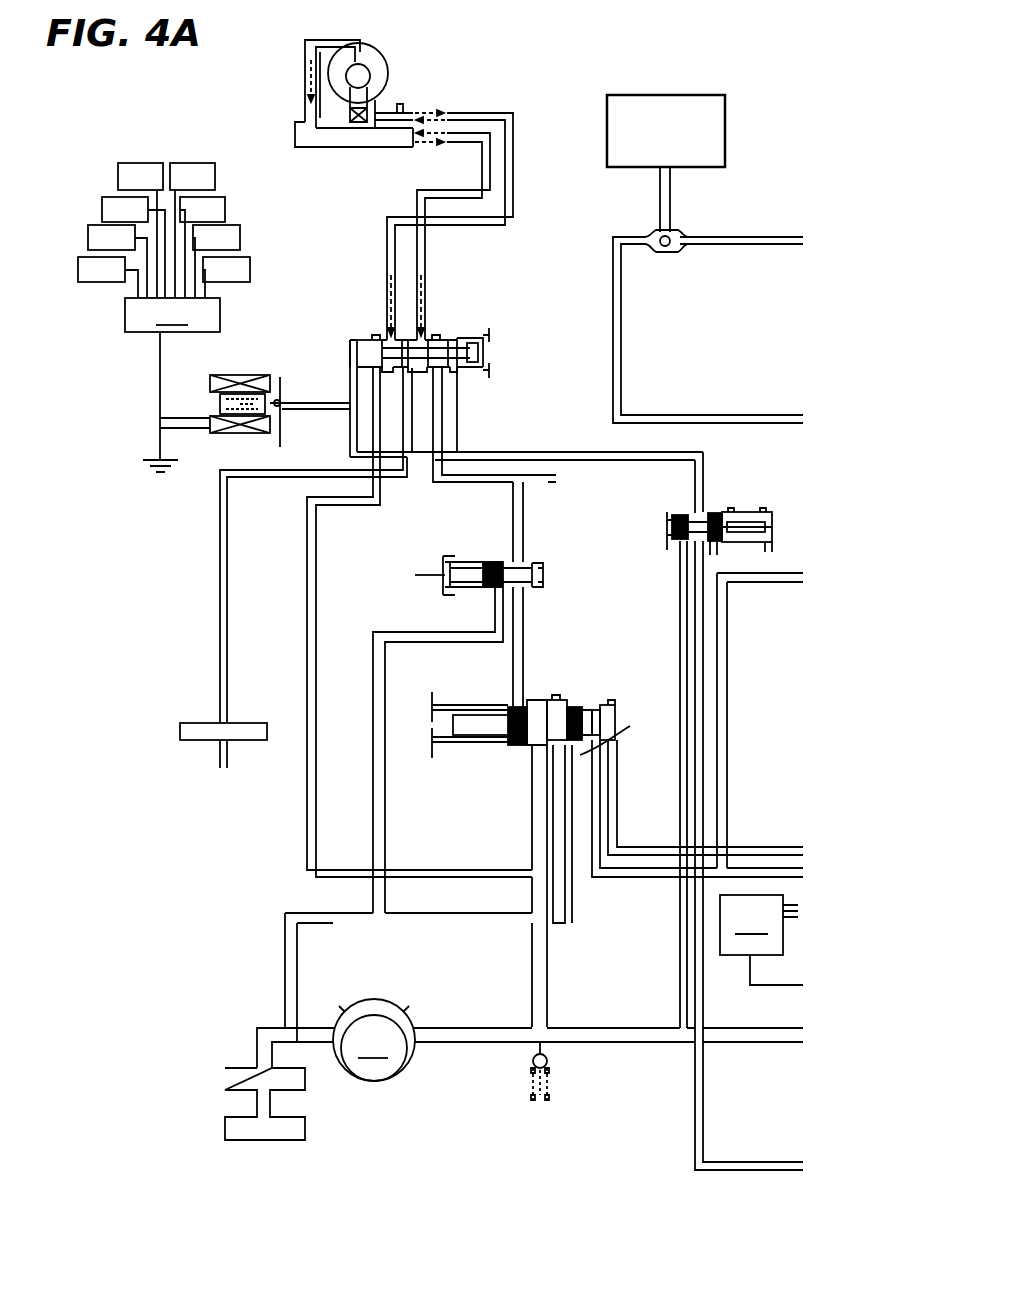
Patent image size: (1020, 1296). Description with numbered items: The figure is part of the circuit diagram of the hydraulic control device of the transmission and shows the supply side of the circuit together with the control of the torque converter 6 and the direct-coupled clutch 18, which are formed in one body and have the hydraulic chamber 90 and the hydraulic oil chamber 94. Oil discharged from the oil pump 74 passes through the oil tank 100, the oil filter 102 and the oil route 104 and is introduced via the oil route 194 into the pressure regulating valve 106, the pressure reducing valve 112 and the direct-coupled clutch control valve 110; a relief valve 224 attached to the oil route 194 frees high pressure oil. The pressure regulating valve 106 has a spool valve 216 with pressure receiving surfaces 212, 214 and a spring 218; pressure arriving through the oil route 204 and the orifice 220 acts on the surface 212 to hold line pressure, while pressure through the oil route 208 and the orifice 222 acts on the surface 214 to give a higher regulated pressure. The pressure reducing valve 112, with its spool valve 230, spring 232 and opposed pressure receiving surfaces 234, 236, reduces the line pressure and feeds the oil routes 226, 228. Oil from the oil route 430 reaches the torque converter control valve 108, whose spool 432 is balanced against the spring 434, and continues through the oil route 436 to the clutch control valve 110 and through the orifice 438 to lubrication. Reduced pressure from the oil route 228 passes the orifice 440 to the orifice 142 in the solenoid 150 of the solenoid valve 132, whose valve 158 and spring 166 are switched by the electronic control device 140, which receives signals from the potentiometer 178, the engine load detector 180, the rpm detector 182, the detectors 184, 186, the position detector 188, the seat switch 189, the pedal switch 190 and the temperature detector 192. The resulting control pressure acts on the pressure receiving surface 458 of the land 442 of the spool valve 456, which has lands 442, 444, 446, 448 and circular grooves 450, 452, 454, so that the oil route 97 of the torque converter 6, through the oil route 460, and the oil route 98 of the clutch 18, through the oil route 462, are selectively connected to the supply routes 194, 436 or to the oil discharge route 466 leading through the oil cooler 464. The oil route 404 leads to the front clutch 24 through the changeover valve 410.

The torque converter 6 is at (372, 50).
The direct-coupled clutch 18 is at (300, 62).
The front clutch 24 is at (720, 135).
The oil pump 74 is at (374, 1040).
The hydraulic chamber 90 is at (305, 108).
The hydraulic oil chamber 94 is at (332, 55).
The oil route 97 is at (400, 104).
The oil route 98 is at (343, 136).
The oil tank 100 is at (238, 1138).
The oil filter 102 is at (228, 1080).
The oil route 104 is at (270, 1028).
The pressure regulating valve 106 is at (604, 828).
The torque converter control valve 108 is at (492, 565).
The direct-coupled clutch control valve 110 is at (497, 354).
The pressure reducing valve 112 is at (694, 707).
The solenoid valve 132 is at (223, 391).
The electronic control device 140 is at (172, 315).
The orifice 142 is at (290, 409).
The solenoid 150 is at (212, 383).
The valve 158 is at (242, 388).
The spring 166 is at (238, 428).
The potentiometer 178 is at (761, 940).
The engine load detector 180 is at (108, 277).
The rpm detector 182 is at (117, 261).
The detector 184 is at (133, 247).
The detector 186 is at (140, 230).
The position detector 188 is at (192, 230).
The seat switch 189 is at (202, 247).
The pedal switch 190 is at (216, 261).
The detector 192 is at (226, 277).
The oil route 194 is at (316, 557).
The oil route 204 is at (782, 845).
The oil route 208 is at (612, 382).
The pressure receiving surface 212 is at (608, 702).
The pressure receiving surface 214 is at (598, 703).
The spool valve 216 is at (520, 705).
The spring 218 is at (448, 745).
The orifice 220 is at (610, 770).
The orifice 222 is at (595, 770).
The relief valve 224 is at (548, 1068).
The oil route 226 is at (700, 630).
The oil route 228 is at (573, 452).
The spool valve 230 is at (675, 527).
The spring 232 is at (750, 504).
The pressure receiving surface 234 is at (710, 512).
The pressure receiving surface 236 is at (742, 510).
The oil route 404 is at (716, 238).
The changeover valve 410 is at (668, 247).
The oil route 430 is at (523, 611).
The valve land 432 is at (495, 565).
The spring 434 is at (447, 560).
The oil route 436 is at (514, 511).
The orifice 438 is at (548, 478).
The orifice 440 is at (352, 438).
The land 442 is at (368, 338).
The land 444 is at (404, 336).
The land 446 is at (438, 338).
The land 448 is at (470, 335).
The circular groove 450 is at (375, 375).
The circular groove 452 is at (425, 378).
The circular groove 454 is at (455, 372).
The spool valve 456 is at (480, 352).
The pressure receiving surface 458 is at (352, 352).
The oil route 460 is at (515, 180).
The oil route 462 is at (486, 155).
The oil cooler 464 is at (194, 742).
The oil discharge route 466 is at (218, 598).